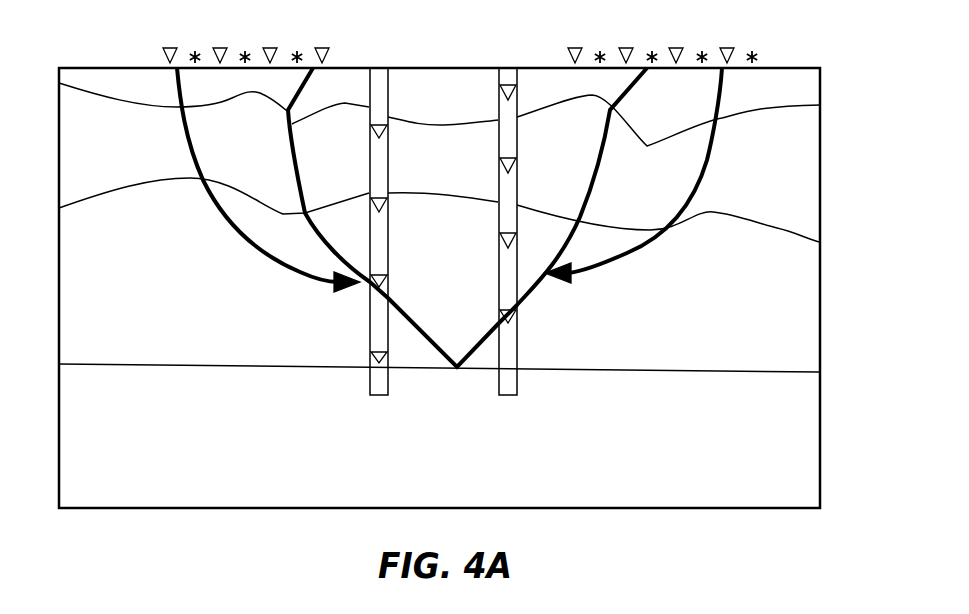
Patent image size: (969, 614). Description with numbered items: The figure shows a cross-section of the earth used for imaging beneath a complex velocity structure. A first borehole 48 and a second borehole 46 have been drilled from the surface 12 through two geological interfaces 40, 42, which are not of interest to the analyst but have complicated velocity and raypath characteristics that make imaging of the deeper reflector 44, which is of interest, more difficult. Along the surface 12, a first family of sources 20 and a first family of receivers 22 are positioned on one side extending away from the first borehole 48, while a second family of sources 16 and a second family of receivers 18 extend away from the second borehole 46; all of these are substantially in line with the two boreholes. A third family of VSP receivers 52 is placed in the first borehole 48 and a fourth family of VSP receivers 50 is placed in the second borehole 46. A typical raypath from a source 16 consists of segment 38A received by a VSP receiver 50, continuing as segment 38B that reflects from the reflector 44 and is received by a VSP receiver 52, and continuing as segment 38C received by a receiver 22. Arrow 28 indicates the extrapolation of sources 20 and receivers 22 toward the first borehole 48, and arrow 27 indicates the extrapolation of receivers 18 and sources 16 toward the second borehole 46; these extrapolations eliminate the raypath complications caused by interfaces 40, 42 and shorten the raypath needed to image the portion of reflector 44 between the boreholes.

The surface 12 is at (820, 69).
The second family of sources 16 is at (600, 50).
The second family of receivers 18 is at (727, 48).
The first family of sources 20 is at (195, 50).
The first family of receivers 22 is at (322, 48).
The arrow 27 is at (620, 257).
The arrow 28 is at (270, 262).
The raypath segment 38A is at (595, 170).
The raypath segment 38B is at (440, 363).
The raypath segment 38C is at (290, 140).
The geological interface 40 is at (798, 106).
The geological interface 42 is at (797, 233).
The reflector 44 is at (598, 373).
The second borehole 46 is at (504, 397).
The first borehole 48 is at (376, 397).
The fourth family of receivers 50 is at (496, 97).
The third family of receivers 52 is at (368, 135).